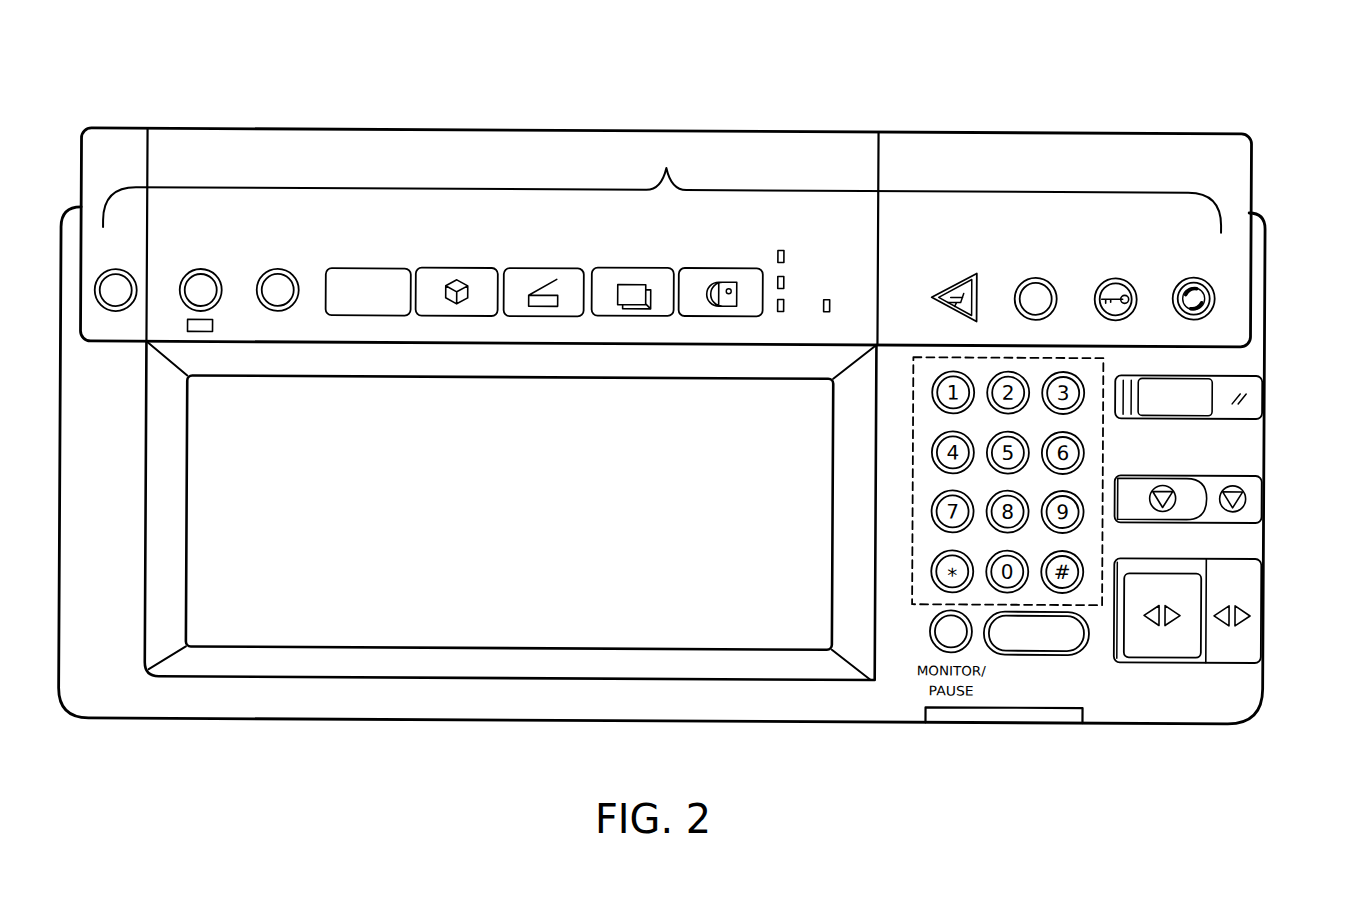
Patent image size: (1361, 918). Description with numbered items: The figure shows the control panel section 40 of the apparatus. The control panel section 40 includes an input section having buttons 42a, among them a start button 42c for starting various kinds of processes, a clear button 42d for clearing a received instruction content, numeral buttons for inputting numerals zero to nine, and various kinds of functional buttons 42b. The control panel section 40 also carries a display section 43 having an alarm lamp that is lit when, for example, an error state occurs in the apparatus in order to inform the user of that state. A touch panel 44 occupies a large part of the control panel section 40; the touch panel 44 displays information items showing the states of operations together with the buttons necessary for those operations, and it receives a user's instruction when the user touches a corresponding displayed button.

The control panel section 40 is at (940, 90).
The buttons 42a is at (1275, 288).
The function key row (help, user functions, template, extension, e-filing, scan, cop 42b is at (665, 166).
The start button 42c is at (1185, 661).
The clear button 42d is at (1083, 643).
The display section 43 is at (1013, 718).
The touch panel 44 is at (468, 622).